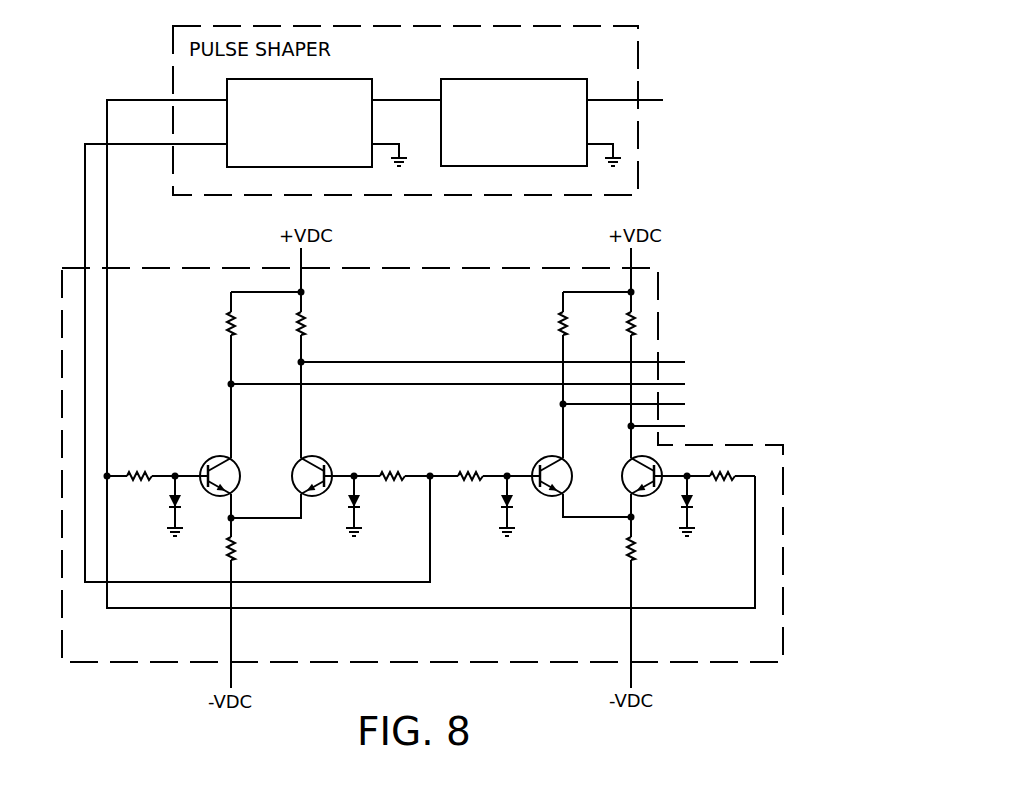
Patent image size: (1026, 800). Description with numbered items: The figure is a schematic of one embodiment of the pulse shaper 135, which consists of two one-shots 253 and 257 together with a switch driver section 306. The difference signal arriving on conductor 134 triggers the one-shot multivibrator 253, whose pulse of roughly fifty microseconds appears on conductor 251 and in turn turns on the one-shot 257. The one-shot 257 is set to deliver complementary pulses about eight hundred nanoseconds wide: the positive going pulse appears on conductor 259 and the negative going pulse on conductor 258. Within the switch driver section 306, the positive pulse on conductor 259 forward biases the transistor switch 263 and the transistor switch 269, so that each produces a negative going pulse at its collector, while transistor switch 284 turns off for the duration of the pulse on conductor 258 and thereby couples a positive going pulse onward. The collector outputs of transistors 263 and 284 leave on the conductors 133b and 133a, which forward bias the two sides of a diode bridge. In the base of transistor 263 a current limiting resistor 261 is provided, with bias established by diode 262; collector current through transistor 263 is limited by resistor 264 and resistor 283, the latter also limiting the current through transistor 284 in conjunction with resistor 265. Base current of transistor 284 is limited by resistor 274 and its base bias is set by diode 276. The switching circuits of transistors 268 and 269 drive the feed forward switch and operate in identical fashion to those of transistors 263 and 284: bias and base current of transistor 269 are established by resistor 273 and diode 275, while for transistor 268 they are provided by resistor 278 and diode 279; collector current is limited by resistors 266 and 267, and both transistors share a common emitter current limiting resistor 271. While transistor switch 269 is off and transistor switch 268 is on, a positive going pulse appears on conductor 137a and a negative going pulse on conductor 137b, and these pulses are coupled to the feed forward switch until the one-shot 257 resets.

The conductor 134 is at (650, 98).
The pulse shaper 135 is at (742, 279).
The output line 133a is at (421, 362).
The conductor 133b is at (440, 385).
The conductor 137a is at (680, 426).
The output line 137b is at (680, 404).
The conductor 251 is at (404, 98).
The one-shot multivibrator 253 is at (504, 79).
The one-shot 257 is at (355, 79).
The conductor 258 is at (84, 232).
The conductor 259 is at (108, 232).
The current limiting resistor 261 is at (140, 472).
The diode 262 is at (172, 503).
The transistor switch 263 is at (258, 448).
The resistor 264 is at (228, 331).
The resistor 265 is at (304, 331).
The resistor 266 is at (560, 331).
The resistor 267 is at (628, 331).
The transistor switch 268 is at (548, 460).
The transistor switch 269 is at (626, 462).
The common emitter current limiting resistor 271 is at (629, 550).
The resistor 273 is at (722, 474).
The resistor 274 is at (392, 472).
The diode 275 is at (690, 503).
The diode 276 is at (357, 503).
The resistor 278 is at (470, 472).
The diode 279 is at (504, 503).
The resistor 283 is at (233, 551).
The transistor switch 284 is at (318, 458).
The switch driver section 306 is at (523, 662).